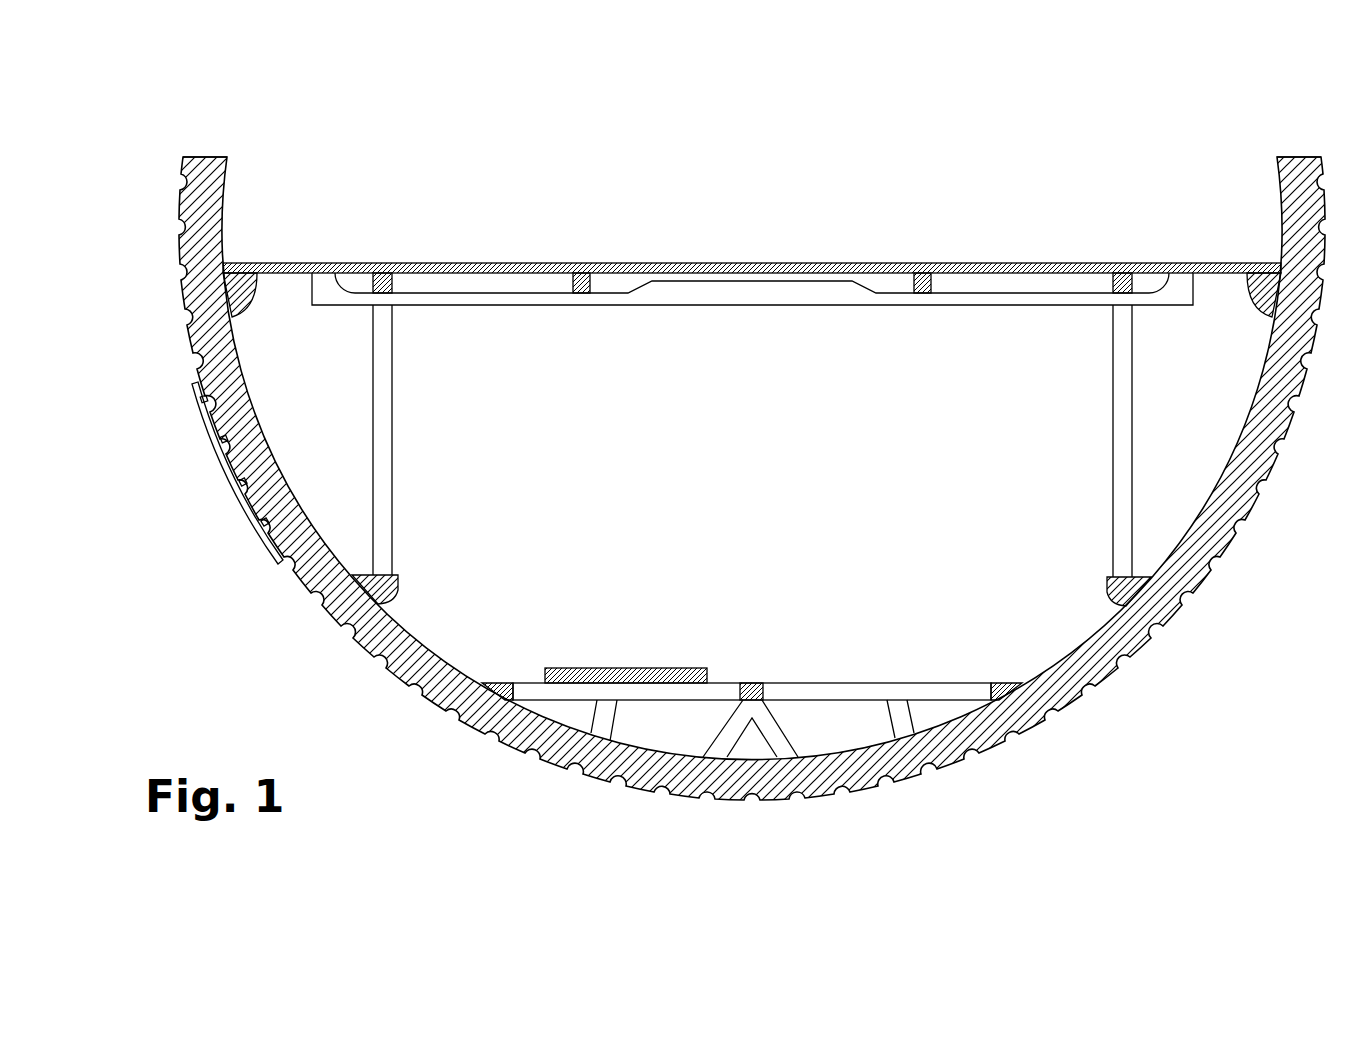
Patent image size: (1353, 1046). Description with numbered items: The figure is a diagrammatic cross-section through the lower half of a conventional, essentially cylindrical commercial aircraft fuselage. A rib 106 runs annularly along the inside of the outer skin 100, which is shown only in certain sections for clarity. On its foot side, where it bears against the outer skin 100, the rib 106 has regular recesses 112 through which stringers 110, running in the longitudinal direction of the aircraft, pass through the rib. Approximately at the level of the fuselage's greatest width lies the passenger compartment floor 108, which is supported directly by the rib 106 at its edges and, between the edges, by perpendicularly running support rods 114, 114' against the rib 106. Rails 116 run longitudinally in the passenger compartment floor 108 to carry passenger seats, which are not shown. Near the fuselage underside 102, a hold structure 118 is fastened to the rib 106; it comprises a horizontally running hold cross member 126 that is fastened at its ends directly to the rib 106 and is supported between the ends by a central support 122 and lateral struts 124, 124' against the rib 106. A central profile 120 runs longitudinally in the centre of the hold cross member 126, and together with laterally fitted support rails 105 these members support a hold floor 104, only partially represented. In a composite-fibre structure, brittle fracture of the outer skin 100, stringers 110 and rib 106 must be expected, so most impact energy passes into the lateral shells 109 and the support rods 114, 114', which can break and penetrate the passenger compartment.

The outer skin 100 is at (240, 505).
The fuselage underside 102 is at (980, 787).
The hold floor 104 is at (617, 668).
The support rails 105 is at (497, 683).
The rib 106 is at (327, 620).
The passenger compartment floor 108 is at (322, 263).
The lateral shells 109 is at (272, 137).
The stringers 110 is at (193, 395).
The recesses 112 is at (195, 222).
The support rod 114 is at (410, 454).
The support rod 114' is at (1087, 455).
The rails 116 is at (1110, 263).
The hold structure 118 is at (810, 648).
The central profile 120 is at (752, 683).
The central support 122 is at (733, 733).
The lateral strut 124 is at (543, 759).
The lateral strut 124' is at (925, 678).
The hold cross member 126 is at (855, 692).